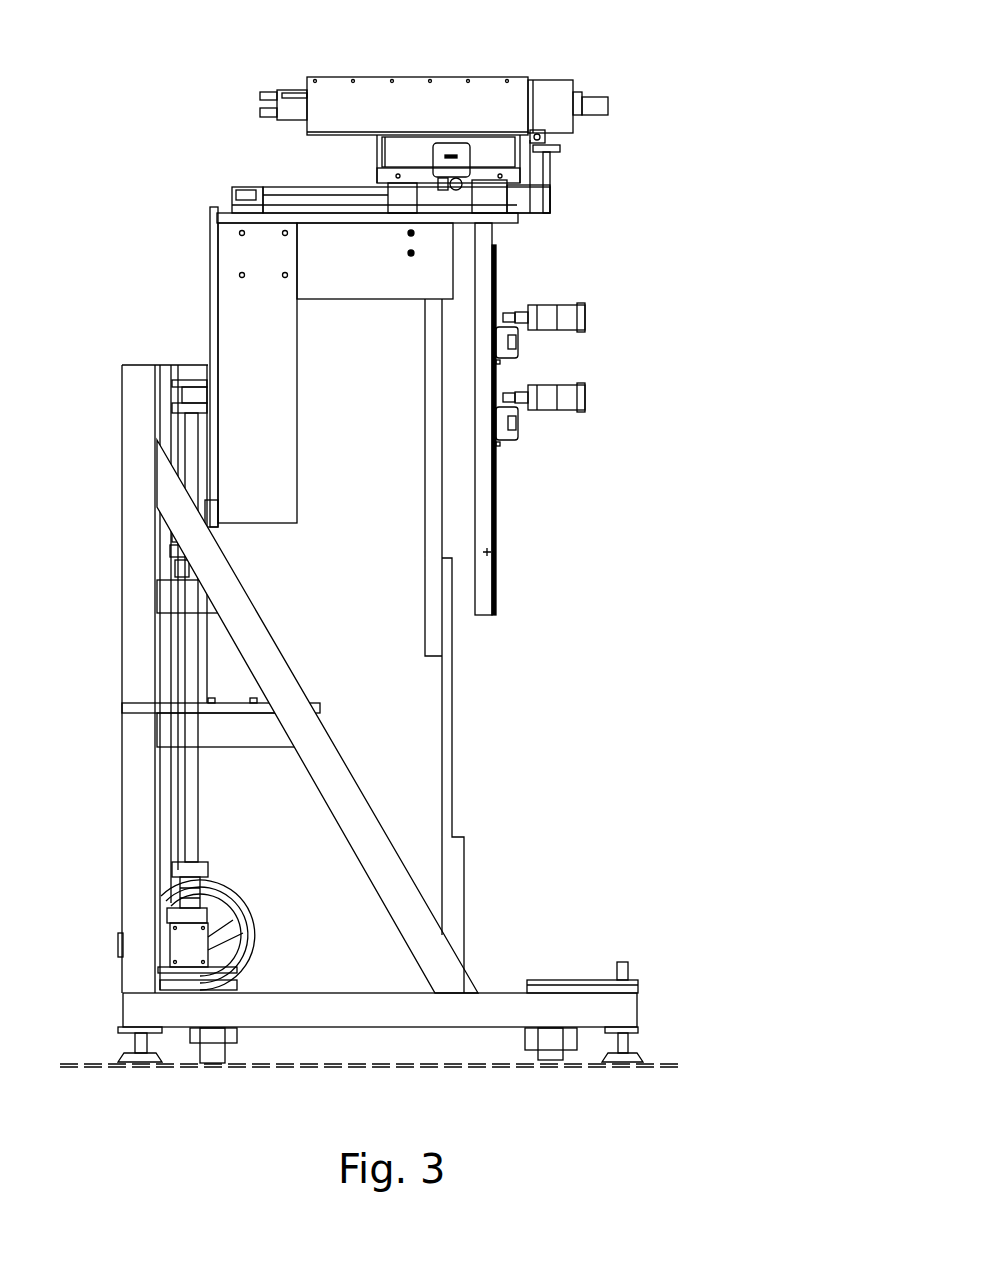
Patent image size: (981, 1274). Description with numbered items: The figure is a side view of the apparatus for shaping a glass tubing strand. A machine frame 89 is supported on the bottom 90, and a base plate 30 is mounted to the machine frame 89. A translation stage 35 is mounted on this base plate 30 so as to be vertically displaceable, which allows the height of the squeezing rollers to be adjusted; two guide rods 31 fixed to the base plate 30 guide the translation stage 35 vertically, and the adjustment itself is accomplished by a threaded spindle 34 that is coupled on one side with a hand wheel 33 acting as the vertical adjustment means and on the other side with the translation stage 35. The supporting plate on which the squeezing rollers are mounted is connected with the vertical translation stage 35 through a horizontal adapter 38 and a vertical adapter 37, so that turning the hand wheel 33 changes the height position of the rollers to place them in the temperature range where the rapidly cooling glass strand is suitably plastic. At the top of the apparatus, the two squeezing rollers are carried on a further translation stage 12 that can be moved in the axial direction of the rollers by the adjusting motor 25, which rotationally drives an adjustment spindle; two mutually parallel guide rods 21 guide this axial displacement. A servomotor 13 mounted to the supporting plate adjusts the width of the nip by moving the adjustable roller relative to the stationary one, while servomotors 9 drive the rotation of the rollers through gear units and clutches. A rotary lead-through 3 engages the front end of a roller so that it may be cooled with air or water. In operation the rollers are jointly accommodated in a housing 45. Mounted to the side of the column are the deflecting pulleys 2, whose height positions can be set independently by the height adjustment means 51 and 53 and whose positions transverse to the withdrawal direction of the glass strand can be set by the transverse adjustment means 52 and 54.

The deflecting pulley 2 is at (585, 317).
The rotary lead-through 3 is at (608, 112).
The servomotor 9 is at (290, 90).
The translation stage 12 is at (392, 146).
The servomotor 13 is at (445, 168).
The guide rod 21 is at (403, 224).
The adjusting motor 25 is at (240, 187).
The base plate 30 is at (163, 532).
The guide rod 31 is at (160, 805).
The hand wheel 33 is at (247, 945).
The threaded spindle 34 is at (195, 817).
The translation stage 35 is at (215, 513).
The vertical adapter 37 is at (288, 458).
The horizontal adapter 38 is at (342, 290).
The housing 45 is at (365, 90).
The height adjustment means 51 is at (487, 552).
The transverse adjustment means 52 is at (517, 440).
The height adjustment means 53 is at (496, 275).
The transverse adjustment means 54 is at (517, 357).
The machine frame 89 is at (133, 598).
The bottom 90 is at (75, 1063).